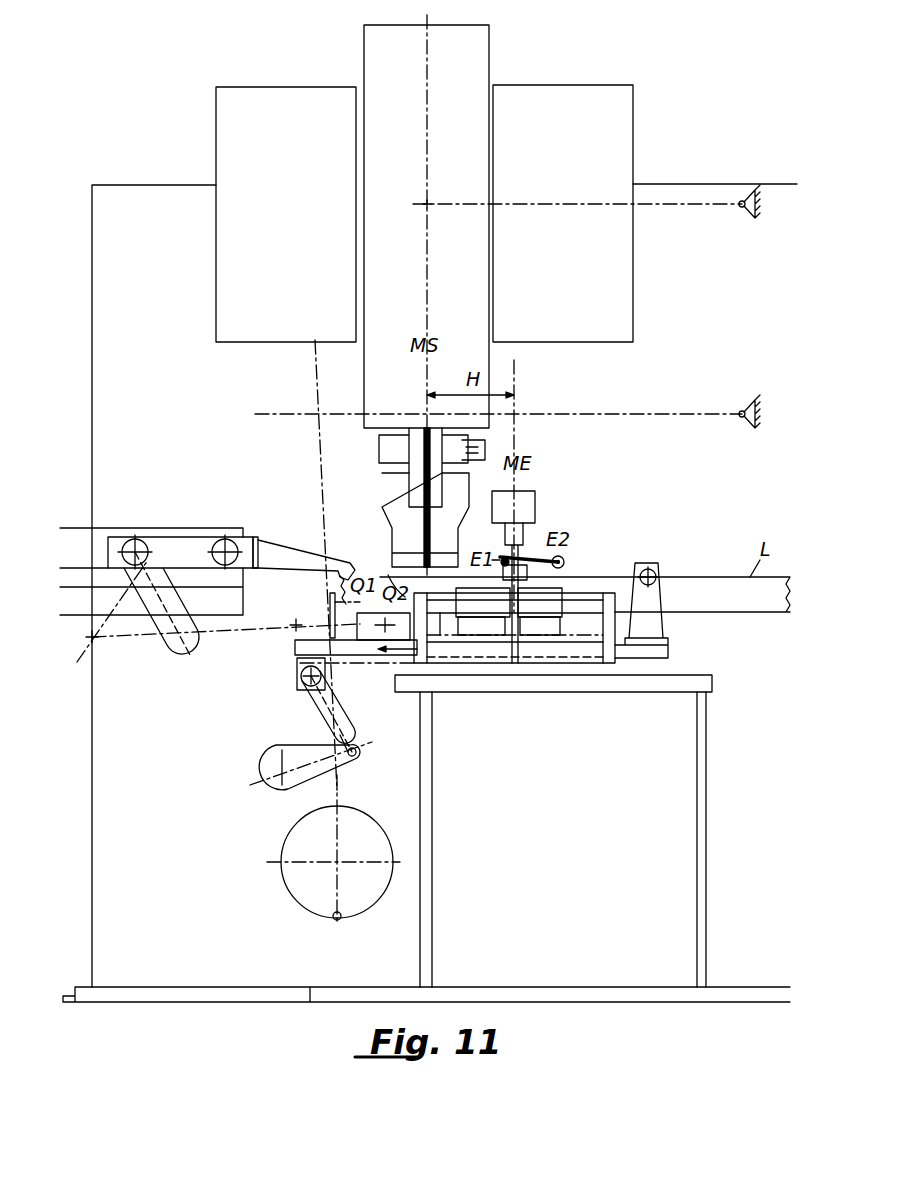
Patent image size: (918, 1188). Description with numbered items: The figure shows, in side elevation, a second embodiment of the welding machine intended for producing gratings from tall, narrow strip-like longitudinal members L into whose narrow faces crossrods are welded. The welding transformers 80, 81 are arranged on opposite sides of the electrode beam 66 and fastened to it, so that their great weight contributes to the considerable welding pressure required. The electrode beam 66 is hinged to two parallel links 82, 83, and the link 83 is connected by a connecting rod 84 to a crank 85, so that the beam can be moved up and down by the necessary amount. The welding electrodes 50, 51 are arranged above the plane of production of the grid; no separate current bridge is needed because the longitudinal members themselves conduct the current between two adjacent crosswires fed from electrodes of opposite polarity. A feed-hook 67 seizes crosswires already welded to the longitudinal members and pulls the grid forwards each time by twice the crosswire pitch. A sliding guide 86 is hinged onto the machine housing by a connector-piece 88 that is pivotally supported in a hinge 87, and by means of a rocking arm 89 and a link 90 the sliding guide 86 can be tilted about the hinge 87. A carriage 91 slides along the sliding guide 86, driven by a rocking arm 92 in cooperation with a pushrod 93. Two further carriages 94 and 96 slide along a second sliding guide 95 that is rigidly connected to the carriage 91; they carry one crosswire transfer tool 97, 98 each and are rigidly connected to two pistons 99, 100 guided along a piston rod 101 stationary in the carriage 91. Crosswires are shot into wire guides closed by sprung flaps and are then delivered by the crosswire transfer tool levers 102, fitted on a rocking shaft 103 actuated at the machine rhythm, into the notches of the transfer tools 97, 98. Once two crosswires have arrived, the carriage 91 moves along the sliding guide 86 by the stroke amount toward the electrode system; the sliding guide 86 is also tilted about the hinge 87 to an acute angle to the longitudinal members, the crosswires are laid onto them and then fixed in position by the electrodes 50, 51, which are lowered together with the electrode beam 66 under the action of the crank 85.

The welding electrode 50 is at (412, 560).
The welding electrode 51 is at (432, 560).
The electrode beam 66 is at (433, 166).
The feed-hook 67 is at (180, 545).
The welding transformer 80 is at (296, 216).
The welding transformer 81 is at (578, 241).
The parallel link 82 is at (712, 204).
The parallel link 83 is at (656, 414).
The connecting rod 84 is at (320, 465).
The crank 85 is at (362, 904).
The sliding guide 86 is at (376, 656).
The hinge 87 is at (658, 565).
The connector-piece 88 is at (655, 628).
The rocking arm 89 is at (262, 750).
The link 90 is at (300, 706).
The carriage 91 is at (600, 658).
The rocking arm 92 is at (172, 652).
The pushrod 93 is at (262, 632).
The carriage 94 is at (527, 632).
The second sliding guide 95 is at (580, 637).
The carriage 96 is at (462, 632).
The crosswire transfer tool 97 is at (465, 588).
The crosswire transfer tool 98 is at (560, 586).
The piston 99 is at (445, 632).
The piston 100 is at (550, 632).
The piston rod 101 is at (427, 650).
The crosswire transfer tool lever 102 is at (522, 552).
The rocking shaft 103 is at (566, 560).